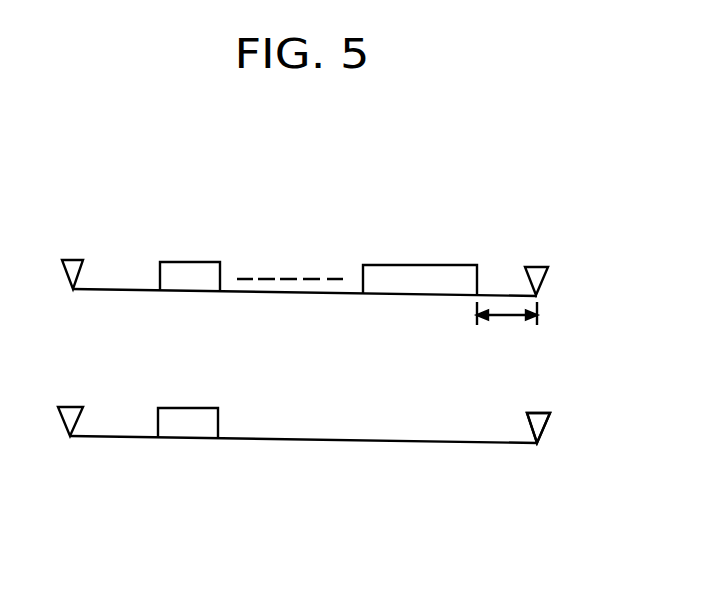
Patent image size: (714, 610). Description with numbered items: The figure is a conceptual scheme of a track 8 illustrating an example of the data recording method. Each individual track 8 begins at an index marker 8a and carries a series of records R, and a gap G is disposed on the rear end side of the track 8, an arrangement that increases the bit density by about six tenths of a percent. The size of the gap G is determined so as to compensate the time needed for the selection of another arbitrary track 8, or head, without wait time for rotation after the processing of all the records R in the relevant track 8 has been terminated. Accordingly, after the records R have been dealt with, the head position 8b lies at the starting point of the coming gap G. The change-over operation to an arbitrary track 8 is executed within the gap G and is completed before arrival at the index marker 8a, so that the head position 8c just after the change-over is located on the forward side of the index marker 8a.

The track 8 is at (112, 437).
The index marker 8a is at (73, 259).
The head position 8b is at (477, 252).
The head position 8c is at (522, 447).
The record R is at (378, 275).
The gap G is at (578, 350).